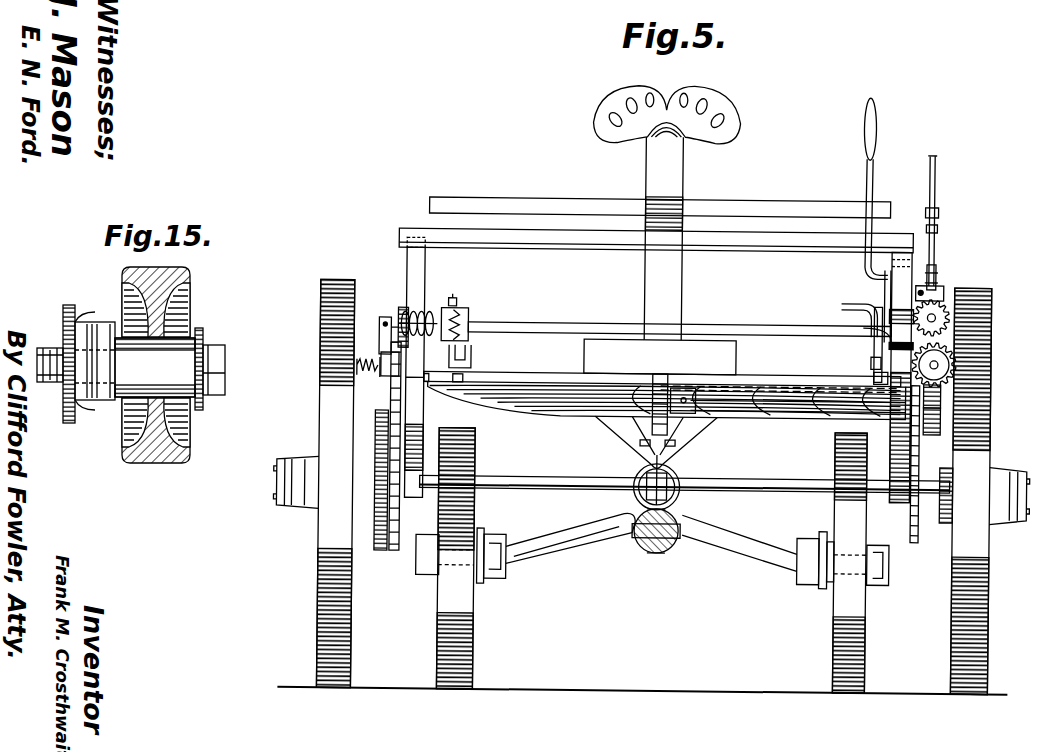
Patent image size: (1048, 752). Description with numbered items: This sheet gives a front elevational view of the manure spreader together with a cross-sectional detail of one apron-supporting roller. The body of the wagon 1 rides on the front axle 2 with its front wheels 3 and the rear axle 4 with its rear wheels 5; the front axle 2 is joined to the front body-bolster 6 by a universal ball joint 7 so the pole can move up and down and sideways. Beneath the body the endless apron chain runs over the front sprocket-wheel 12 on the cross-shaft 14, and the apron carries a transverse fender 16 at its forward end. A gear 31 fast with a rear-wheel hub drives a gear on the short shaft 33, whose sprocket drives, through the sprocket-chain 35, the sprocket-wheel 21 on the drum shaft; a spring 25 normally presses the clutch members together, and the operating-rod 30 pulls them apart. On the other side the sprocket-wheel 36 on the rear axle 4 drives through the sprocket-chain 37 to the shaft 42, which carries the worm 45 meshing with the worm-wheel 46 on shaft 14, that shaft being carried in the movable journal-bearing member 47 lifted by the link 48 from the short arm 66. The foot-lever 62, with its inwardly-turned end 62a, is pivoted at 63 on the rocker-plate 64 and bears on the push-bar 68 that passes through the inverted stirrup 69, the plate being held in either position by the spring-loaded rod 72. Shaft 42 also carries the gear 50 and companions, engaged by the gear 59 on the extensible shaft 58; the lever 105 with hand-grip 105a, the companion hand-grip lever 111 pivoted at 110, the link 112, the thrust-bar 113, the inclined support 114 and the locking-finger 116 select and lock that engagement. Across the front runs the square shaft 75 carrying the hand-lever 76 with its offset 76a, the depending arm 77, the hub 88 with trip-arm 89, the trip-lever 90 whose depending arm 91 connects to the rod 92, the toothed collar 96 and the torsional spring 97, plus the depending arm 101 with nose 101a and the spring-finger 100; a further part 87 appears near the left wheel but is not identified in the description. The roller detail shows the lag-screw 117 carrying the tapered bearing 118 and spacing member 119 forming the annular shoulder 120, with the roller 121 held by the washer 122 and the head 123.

In FIG. 5, the body of the wagon 1 is at (578, 240).
In FIG. 5, the front axle 2 is at (580, 546).
In FIG. 5, the front wheels 3 is at (478, 598).
In FIG. 5, the rear axle 4 is at (752, 482).
In FIG. 5, the rear wheels 5 is at (953, 622).
In FIG. 5, the front body-bolster 6 is at (592, 416).
In FIG. 5, the universal ball joint 7 is at (676, 528).
In FIG. 5, the front sprocket-wheel 12 is at (652, 435).
In FIG. 5, the front cross-shaft 14 is at (762, 412).
In FIG. 5, the fender 16 is at (548, 203).
In FIG. 5, the sprocket-wheel 21 is at (380, 348).
In FIG. 5, the spring 25 is at (366, 362).
In FIG. 5, the operating-rod 30 is at (382, 370).
In FIG. 5, the gear 31 is at (381, 556).
In FIG. 5, the short shaft 33 is at (394, 554).
In FIG. 5, the sprocket-chain 35 is at (389, 510).
In FIG. 5, the sprocket-wheel 36 is at (914, 540).
In FIG. 5, the sprocket-chain 37 is at (919, 458).
In FIG. 5, the shaft 42 is at (948, 340).
In FIG. 5, the worm 45 is at (956, 358).
In FIG. 5, the worm-wheel 46 is at (942, 416).
In FIG. 5, the journal-bearing member 47 is at (945, 430).
In FIG. 5, the link 48 is at (942, 390).
In FIG. 5, the gear 50 is at (940, 360).
In FIG. 5, the shaft 58 is at (931, 318).
In FIG. 5, the gear 59 is at (992, 292).
In FIG. 5, the foot-lever 62 is at (872, 320).
In FIG. 5, the inwardly-turned upper end 62a is at (849, 310).
In FIG. 5, the pivot 63 is at (867, 348).
In FIG. 5, the rocker-plate 64 is at (870, 360).
In FIG. 5, the short arm 66 is at (988, 325).
In FIG. 5, the push-bar 68 is at (882, 382).
In FIG. 5, the inverted stirrup 69 is at (875, 376).
In FIG. 5, the rod 72 is at (887, 388).
In FIG. 5, the square shaft 75 is at (590, 327).
In FIG. 5, the hand-lever 76 is at (864, 160).
In FIG. 5, the inward offset 76a is at (874, 306).
In FIG. 5, the depending arm 77 is at (992, 308).
In FIG. 5, the shifting lever 87 is at (340, 332).
In FIG. 5, the hub 88 is at (470, 323).
In FIG. 5, the trip-arm 89 is at (458, 311).
In FIG. 5, the trip-lever 90 is at (471, 353).
In FIG. 5, the depending arm 91 is at (662, 386).
In FIG. 5, the rod 92 is at (466, 383).
In FIG. 5, the collar 96 is at (449, 299).
In FIG. 5, the torsional spring 97 is at (418, 324).
In FIG. 5, the spring-finger 100 is at (750, 372).
In FIG. 5, the depending arm 101 is at (866, 338).
In FIG. 5, the nose 101a is at (870, 360).
In FIG. 5, the lever 105 is at (937, 238).
In FIG. 5, the hand-grip 105a is at (935, 178).
In FIG. 5, the pivot 110 is at (938, 211).
In FIG. 5, the hand-grip lever 111 is at (926, 175).
In FIG. 5, the link 112 is at (924, 227).
In FIG. 5, the thrust-bar 113 is at (923, 277).
In FIG. 5, the inclined stationary support 114 is at (938, 286).
In FIG. 5, the locking-finger 116 is at (1002, 262).
In FIG. 15, the lag-screw 117 is at (50, 350).
In FIG. 15, the bearing portion 118 is at (155, 367).
In FIG. 15, the spacing member 119 is at (75, 412).
In FIG. 15, the annular shoulder 120 is at (113, 322).
In FIG. 15, the roller 121 is at (190, 280).
In FIG. 15, the washer 122 is at (203, 333).
In FIG. 15, the head 123 is at (226, 367).